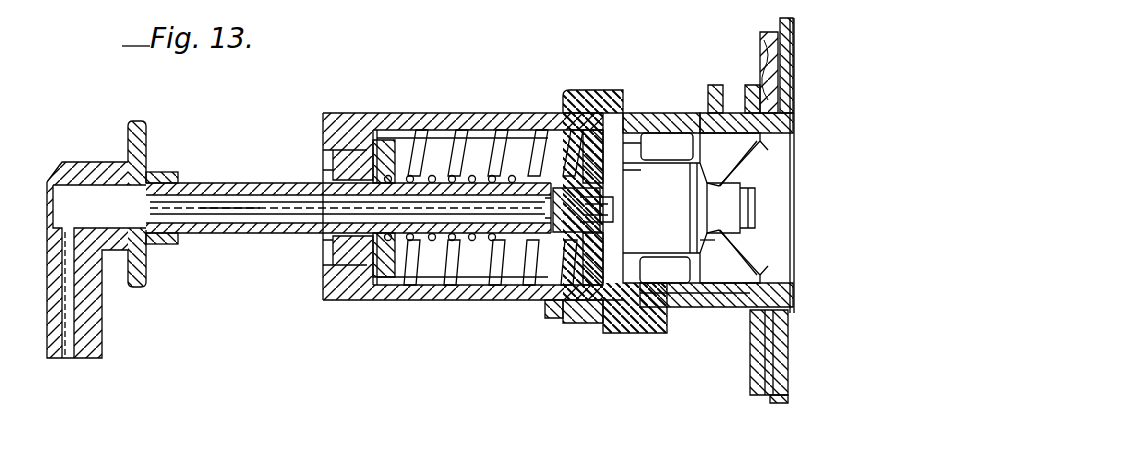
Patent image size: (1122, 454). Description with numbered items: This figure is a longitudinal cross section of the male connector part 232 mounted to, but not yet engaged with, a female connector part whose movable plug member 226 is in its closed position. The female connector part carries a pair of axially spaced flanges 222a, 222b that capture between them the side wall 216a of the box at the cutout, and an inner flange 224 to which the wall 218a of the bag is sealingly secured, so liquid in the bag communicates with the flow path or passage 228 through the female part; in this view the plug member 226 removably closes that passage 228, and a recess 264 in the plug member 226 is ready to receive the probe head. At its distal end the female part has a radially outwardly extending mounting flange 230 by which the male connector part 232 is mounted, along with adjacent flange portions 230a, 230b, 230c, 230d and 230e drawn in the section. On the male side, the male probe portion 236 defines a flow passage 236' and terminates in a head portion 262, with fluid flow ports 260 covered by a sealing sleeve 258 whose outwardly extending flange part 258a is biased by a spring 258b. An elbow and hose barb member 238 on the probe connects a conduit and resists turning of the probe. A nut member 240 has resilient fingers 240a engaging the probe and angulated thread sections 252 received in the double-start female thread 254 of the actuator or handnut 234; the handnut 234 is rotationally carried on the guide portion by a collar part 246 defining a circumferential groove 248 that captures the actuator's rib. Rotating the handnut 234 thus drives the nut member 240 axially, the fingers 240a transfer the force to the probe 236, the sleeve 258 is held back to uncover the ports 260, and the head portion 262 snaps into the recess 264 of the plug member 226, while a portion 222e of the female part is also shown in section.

The elbow and hose barb member 238 is at (97, 158).
The male probe portion 236 is at (348, 160).
The flow passage 236' is at (237, 235).
The male connector part 232 is at (535, 110).
The nut member 240 is at (333, 143).
The resilient fingers 240a is at (330, 170).
The actuator member (handnut) 234 is at (470, 300).
The angulated thread sections 252 is at (393, 118).
The double-start female thread 254 is at (440, 288).
The flange part 258a is at (502, 113).
The spring 258b is at (360, 252).
The sealing sleeve 258 is at (548, 296).
The fluid flow ports 260 is at (542, 212).
The head portion 262 is at (665, 212).
The mounting flange 230 is at (640, 95).
The nut flange 230a is at (672, 113).
The valve flap 230b is at (775, 156).
The valve seat 230c is at (705, 143).
The flap hinge 230d is at (748, 170).
The flap tip 230e is at (770, 262).
The collar part 246 is at (583, 324).
The circumferential groove 248 is at (560, 320).
The flange 222a is at (793, 105).
The flange 222b is at (752, 87).
The body portion 222e is at (710, 234).
The side wall 216a is at (760, 32).
The wall of bag 218a is at (788, 20).
The inner flange 224 is at (793, 58).
The plug member 226 is at (795, 228).
The flow path or passage 228 is at (665, 185).
The recess 264 is at (707, 183).